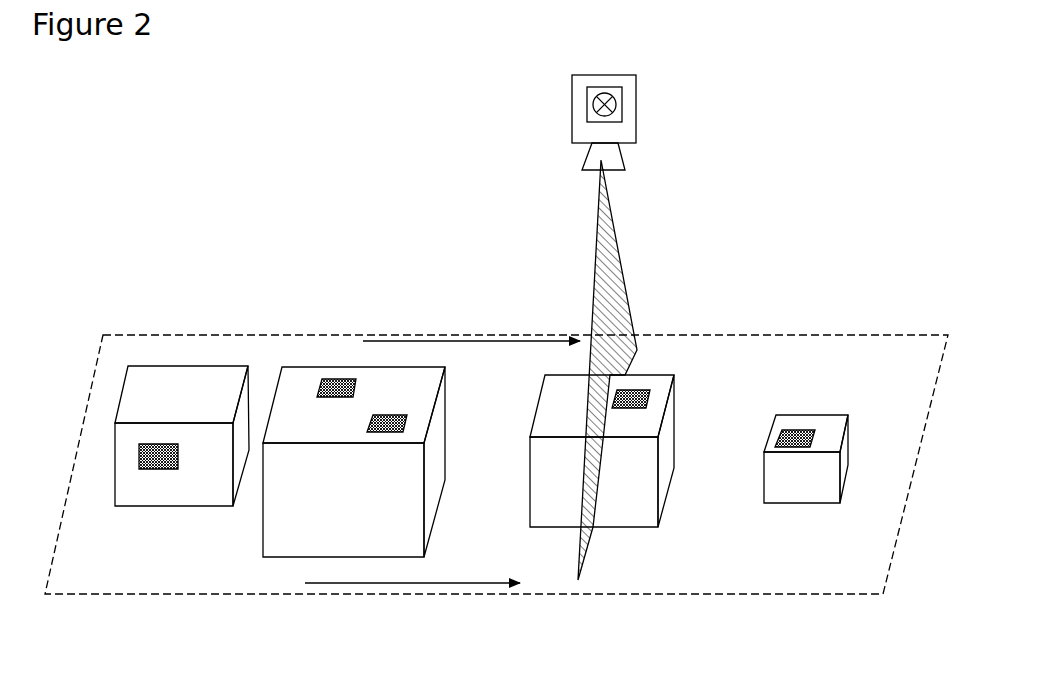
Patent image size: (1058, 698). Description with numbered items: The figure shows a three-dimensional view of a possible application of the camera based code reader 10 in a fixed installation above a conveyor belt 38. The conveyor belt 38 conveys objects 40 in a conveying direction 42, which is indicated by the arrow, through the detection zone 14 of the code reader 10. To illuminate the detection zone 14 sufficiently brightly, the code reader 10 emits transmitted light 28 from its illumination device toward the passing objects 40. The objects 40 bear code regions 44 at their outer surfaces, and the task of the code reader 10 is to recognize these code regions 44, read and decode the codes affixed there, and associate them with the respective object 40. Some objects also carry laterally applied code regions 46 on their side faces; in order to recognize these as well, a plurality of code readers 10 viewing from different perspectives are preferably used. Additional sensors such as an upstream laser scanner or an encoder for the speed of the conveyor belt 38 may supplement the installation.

The code reader 10 is at (605, 116).
The detection zone 14 is at (646, 370).
The transmitted light 28 is at (554, 104).
The conveyor belt 38 is at (496, 491).
The objects 40 is at (689, 472).
The conveying direction 42 is at (343, 494).
The code regions 44 is at (566, 368).
The laterally applied code regions 46 is at (280, 468).